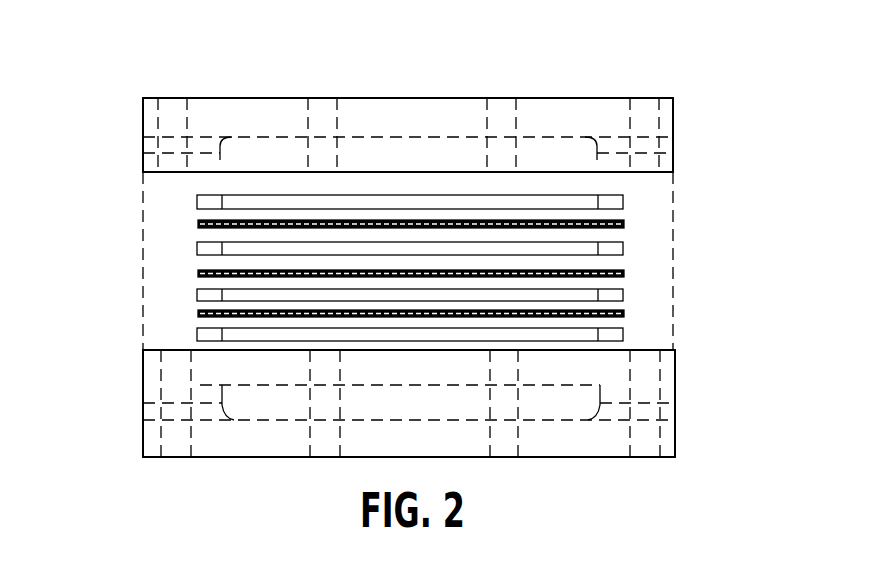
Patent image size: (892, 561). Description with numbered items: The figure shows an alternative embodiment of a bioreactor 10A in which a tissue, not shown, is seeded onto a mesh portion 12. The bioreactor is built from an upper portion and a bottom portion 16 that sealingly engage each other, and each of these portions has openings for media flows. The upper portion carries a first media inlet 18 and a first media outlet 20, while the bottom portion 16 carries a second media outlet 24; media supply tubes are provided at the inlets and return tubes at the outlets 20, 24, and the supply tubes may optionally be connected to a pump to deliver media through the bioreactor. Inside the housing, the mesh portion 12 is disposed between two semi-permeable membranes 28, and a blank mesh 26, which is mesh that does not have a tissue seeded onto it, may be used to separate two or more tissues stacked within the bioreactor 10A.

The bioreactor 10A is at (508, 88).
The mesh portion 12 is at (197, 249).
The bottom portion 16 is at (143, 403).
The first media inlet 18 is at (143, 143).
The first media outlet 20 is at (675, 143).
The second media outlet 24 is at (676, 420).
The blank mesh 26 is at (627, 268).
The semi-permeable membranes 28 is at (197, 318).